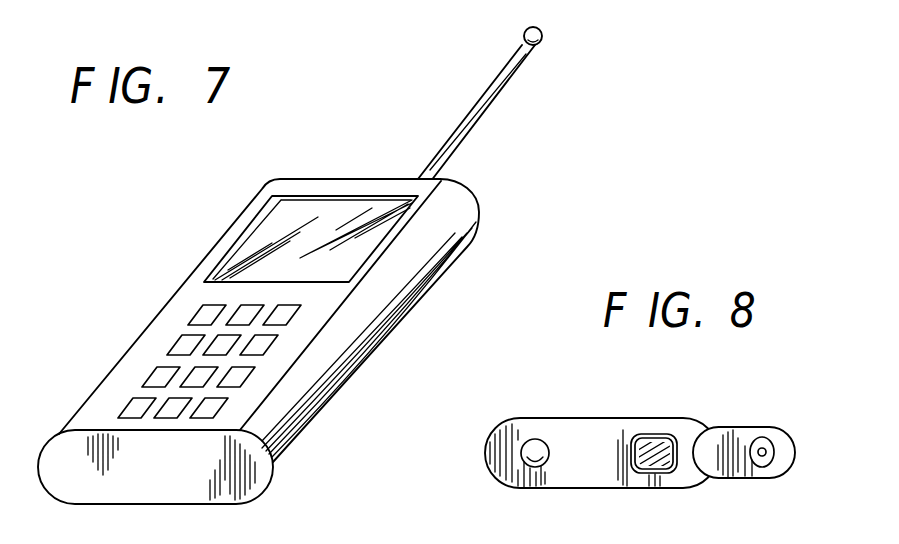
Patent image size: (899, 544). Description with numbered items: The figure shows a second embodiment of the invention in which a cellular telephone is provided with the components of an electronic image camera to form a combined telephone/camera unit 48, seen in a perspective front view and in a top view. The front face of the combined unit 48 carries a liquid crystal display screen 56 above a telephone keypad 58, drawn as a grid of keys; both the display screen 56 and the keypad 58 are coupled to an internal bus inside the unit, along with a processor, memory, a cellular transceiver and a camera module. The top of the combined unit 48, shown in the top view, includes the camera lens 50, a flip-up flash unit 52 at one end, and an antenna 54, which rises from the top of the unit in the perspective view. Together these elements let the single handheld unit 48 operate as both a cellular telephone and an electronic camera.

In FIG. 7, the combined telephone/camera unit 48 is at (225, 220).
In FIG. 7, the liquid crystal display screen 56 is at (338, 210).
In FIG. 7, the telephone keypad 58 is at (146, 336).
In FIG. 8, the lens 50 is at (668, 437).
In FIG. 8, the flip-up flash unit 52 is at (745, 432).
In FIG. 8, the antenna 54 is at (533, 439).